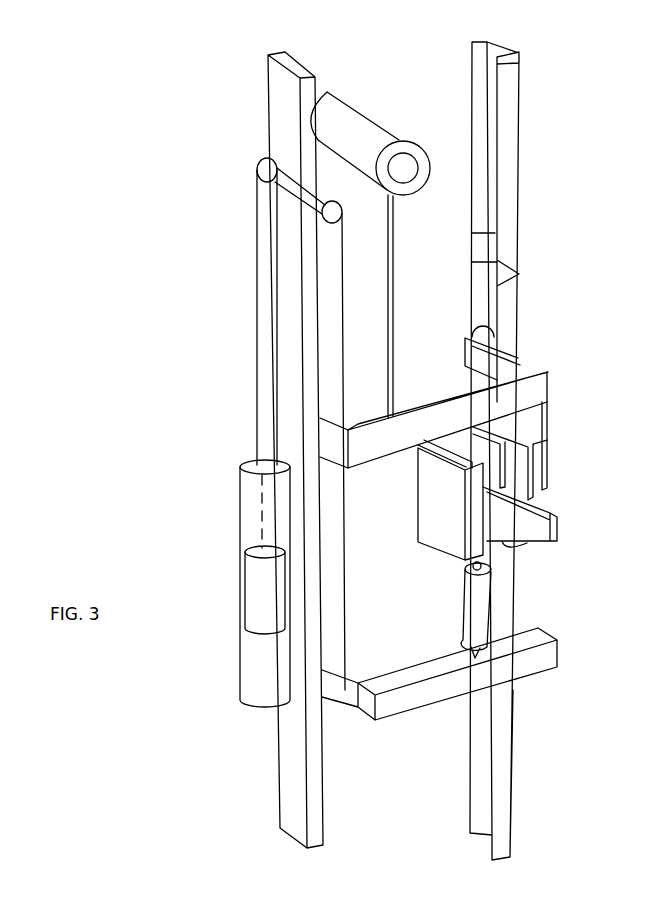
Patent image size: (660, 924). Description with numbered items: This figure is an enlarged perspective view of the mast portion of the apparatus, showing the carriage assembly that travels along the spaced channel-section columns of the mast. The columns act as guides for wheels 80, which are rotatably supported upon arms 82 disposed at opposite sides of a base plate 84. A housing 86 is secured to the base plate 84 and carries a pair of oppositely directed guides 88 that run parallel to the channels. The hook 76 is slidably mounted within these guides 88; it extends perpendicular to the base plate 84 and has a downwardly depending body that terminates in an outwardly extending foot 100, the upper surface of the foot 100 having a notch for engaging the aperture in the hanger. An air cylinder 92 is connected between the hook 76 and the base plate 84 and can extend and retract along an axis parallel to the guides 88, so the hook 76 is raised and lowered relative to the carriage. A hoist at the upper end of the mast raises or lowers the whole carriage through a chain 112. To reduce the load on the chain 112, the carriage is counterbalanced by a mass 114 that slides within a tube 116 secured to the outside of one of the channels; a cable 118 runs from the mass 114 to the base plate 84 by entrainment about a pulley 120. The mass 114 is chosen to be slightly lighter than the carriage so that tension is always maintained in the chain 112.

The hook 76 is at (530, 520).
The wheels 80 is at (497, 338).
The arms 82 is at (330, 437).
The base plate 84 is at (406, 536).
The housing 86 is at (443, 533).
The guides 88 is at (440, 455).
The air cylinder 92 is at (478, 612).
The foot 100 is at (360, 112).
The chain 112 is at (397, 257).
The mass 114 is at (263, 585).
The tube 116 is at (258, 665).
The cable 118 is at (258, 351).
The pulley 120 is at (257, 165).